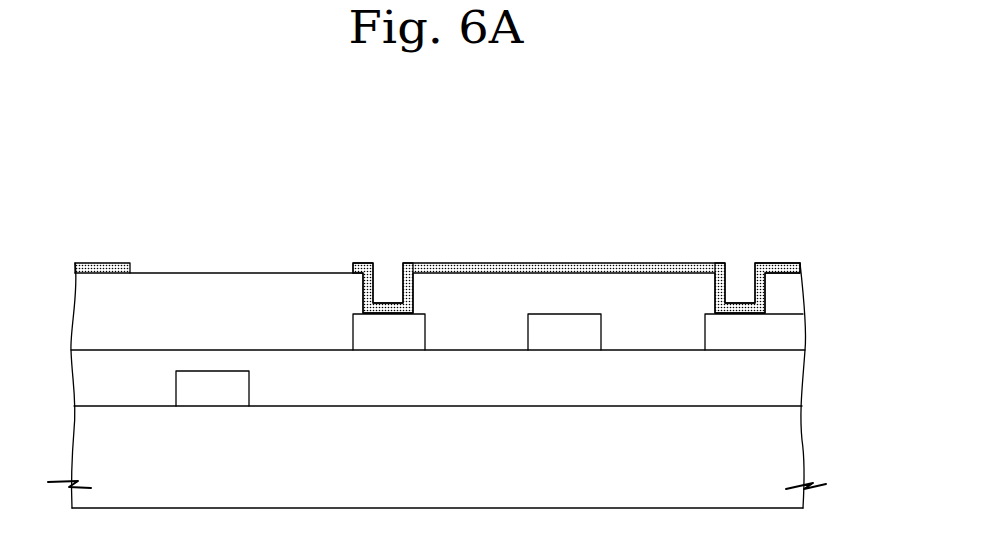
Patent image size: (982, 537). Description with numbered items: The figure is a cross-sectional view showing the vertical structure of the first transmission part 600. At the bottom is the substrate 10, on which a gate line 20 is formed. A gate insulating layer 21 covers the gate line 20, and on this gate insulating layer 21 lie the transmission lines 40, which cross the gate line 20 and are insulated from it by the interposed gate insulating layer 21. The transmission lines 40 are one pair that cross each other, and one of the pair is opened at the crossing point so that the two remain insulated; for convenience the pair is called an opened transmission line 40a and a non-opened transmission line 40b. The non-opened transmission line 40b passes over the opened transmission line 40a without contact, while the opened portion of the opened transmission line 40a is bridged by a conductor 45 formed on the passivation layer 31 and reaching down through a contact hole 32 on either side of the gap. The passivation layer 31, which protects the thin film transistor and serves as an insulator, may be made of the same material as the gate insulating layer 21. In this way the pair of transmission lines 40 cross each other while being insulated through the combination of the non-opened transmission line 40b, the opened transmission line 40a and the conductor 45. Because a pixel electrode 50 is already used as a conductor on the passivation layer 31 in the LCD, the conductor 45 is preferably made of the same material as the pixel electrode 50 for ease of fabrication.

The first transmission part 600 is at (200, 153).
The substrate 10 is at (793, 457).
The gate line 20 is at (210, 400).
The gate insulating layer 21 is at (793, 380).
The passivation layer 31 is at (83, 315).
The contact hole 32 is at (407, 293).
The transmission lines 40 is at (578, 399).
The opened transmission line 40a is at (387, 342).
The non-opened transmission line 40b is at (568, 379).
The conductor 45 is at (557, 265).
The pixel electrode 50 is at (100, 263).